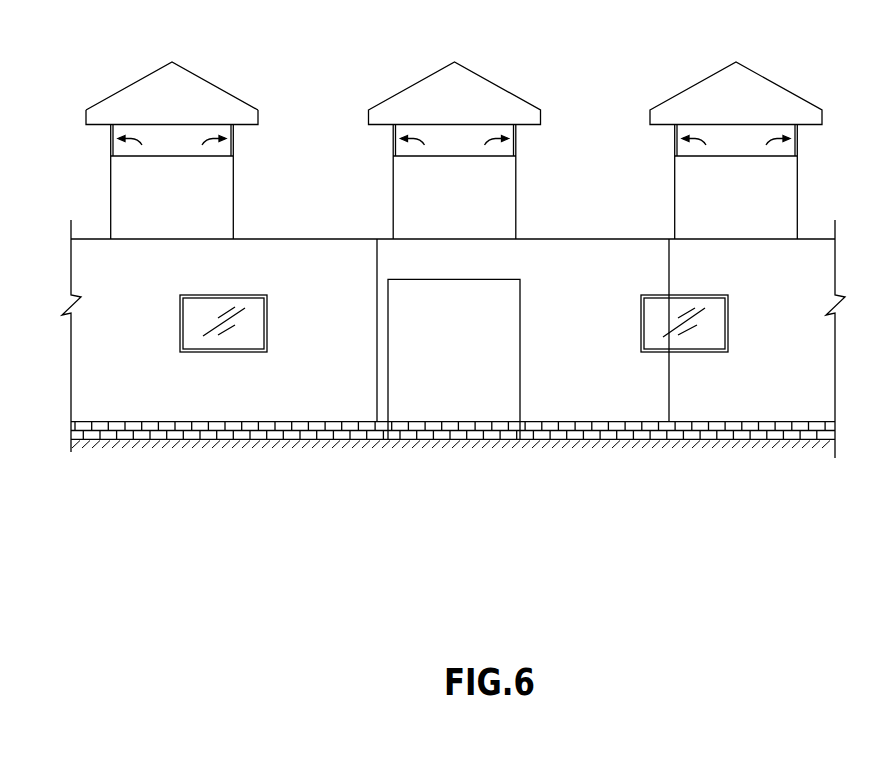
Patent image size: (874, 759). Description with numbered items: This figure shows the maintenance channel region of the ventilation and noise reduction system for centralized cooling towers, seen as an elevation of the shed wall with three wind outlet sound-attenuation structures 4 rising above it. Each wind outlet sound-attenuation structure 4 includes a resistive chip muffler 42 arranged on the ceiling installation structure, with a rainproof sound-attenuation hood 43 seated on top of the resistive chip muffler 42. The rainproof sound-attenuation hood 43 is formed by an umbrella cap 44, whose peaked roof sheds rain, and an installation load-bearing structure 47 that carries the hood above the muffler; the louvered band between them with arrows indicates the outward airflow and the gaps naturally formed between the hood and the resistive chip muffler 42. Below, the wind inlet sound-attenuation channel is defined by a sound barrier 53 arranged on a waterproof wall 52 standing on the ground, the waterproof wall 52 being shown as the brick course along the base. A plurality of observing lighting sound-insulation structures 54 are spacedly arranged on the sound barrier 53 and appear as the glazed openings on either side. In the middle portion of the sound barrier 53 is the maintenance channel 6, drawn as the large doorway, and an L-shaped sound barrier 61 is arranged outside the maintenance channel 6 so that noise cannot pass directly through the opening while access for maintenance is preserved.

The wind outlet sound-attenuation structure 4 is at (162, 133).
The resistive chip muffler 42 is at (134, 208).
The rainproof sound-attenuation hood 43 is at (127, 113).
The umbrella cap 44 is at (172, 62).
The installation load-bearing structure 47 is at (233, 139).
The waterproof wall 52 is at (238, 430).
The sound barrier 53 is at (303, 383).
The observing lighting sound-insulation structure 54 is at (203, 337).
The maintenance channel 6 is at (450, 400).
The L-shaped sound barrier 61 is at (573, 347).